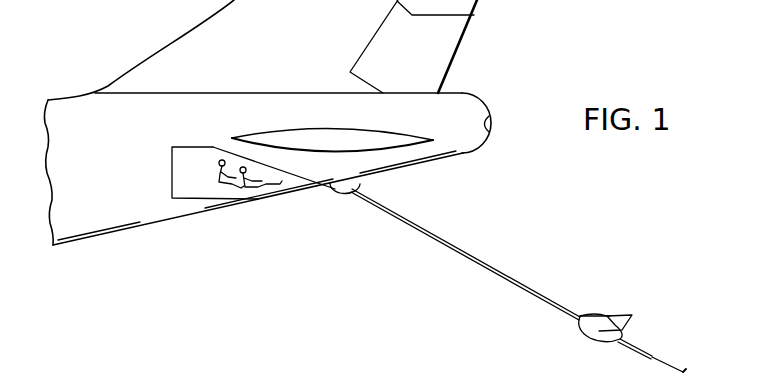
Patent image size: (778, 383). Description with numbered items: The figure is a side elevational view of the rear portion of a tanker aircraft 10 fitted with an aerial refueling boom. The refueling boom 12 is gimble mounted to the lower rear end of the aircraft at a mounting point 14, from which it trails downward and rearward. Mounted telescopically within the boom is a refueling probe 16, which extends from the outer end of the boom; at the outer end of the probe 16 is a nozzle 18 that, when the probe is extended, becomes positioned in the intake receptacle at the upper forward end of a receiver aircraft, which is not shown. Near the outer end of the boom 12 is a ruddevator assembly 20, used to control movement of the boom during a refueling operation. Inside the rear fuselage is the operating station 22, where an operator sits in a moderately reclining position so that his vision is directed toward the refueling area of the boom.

The aircraft 10 is at (478, 94).
The refueling boom 12 is at (450, 235).
The gimble mount 14 is at (341, 194).
The refueling probe 16 is at (663, 360).
The nozzle 18 is at (684, 372).
The ruddevator assembly 20 is at (622, 314).
The operating station 22 is at (225, 199).